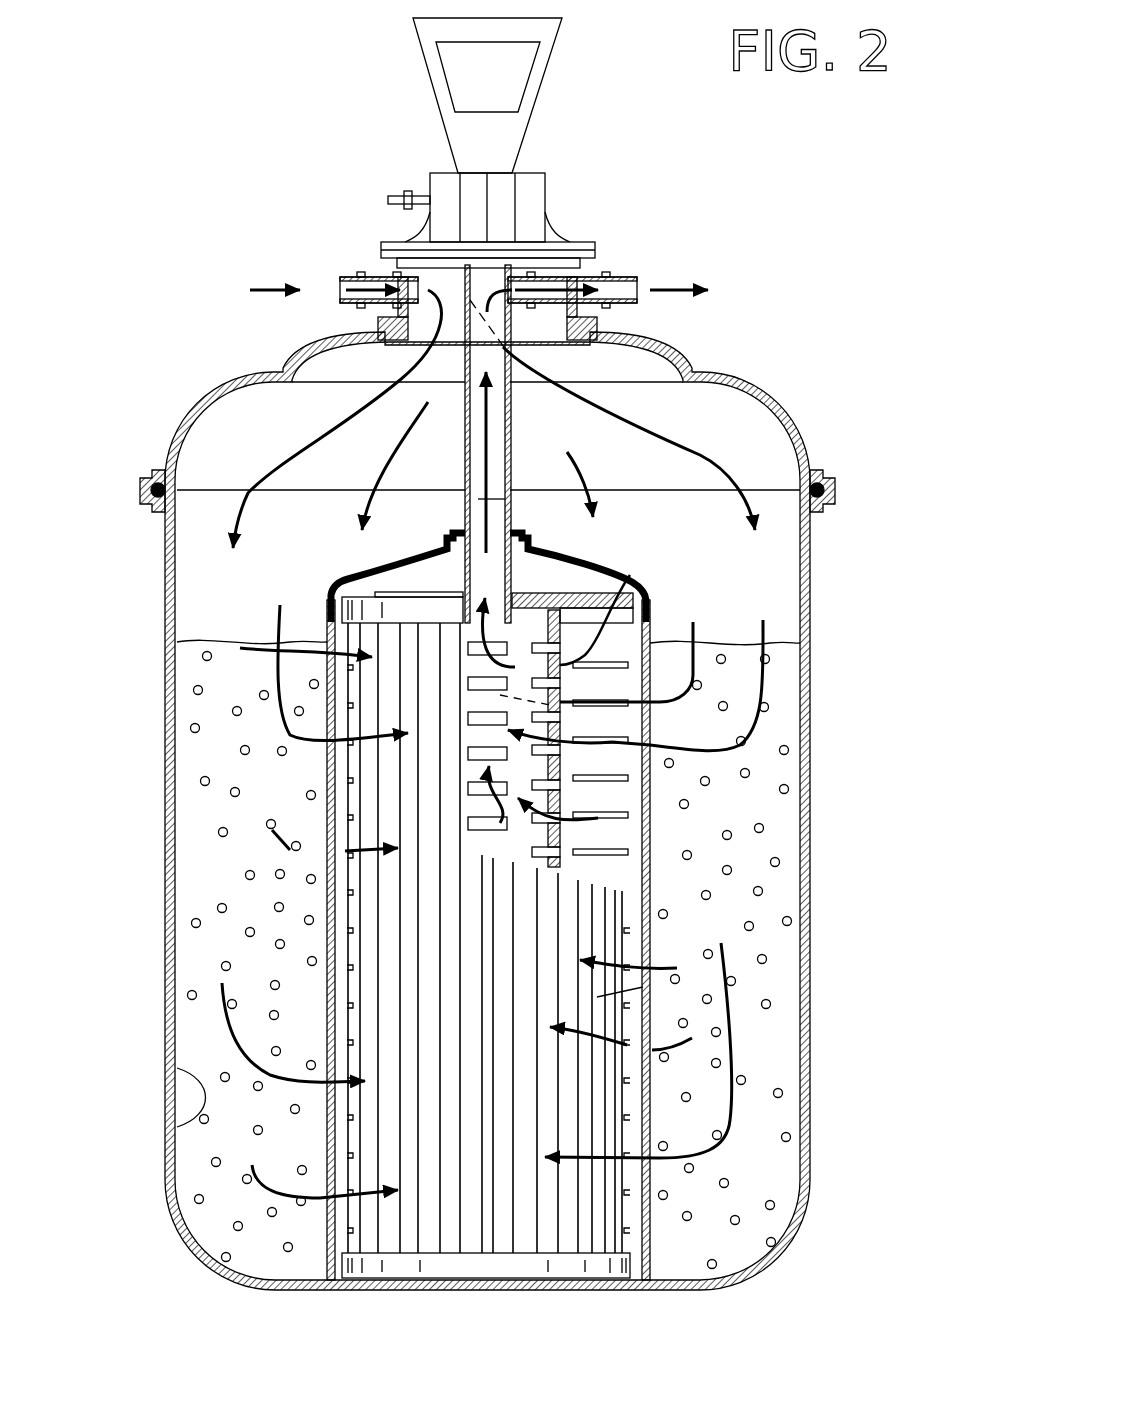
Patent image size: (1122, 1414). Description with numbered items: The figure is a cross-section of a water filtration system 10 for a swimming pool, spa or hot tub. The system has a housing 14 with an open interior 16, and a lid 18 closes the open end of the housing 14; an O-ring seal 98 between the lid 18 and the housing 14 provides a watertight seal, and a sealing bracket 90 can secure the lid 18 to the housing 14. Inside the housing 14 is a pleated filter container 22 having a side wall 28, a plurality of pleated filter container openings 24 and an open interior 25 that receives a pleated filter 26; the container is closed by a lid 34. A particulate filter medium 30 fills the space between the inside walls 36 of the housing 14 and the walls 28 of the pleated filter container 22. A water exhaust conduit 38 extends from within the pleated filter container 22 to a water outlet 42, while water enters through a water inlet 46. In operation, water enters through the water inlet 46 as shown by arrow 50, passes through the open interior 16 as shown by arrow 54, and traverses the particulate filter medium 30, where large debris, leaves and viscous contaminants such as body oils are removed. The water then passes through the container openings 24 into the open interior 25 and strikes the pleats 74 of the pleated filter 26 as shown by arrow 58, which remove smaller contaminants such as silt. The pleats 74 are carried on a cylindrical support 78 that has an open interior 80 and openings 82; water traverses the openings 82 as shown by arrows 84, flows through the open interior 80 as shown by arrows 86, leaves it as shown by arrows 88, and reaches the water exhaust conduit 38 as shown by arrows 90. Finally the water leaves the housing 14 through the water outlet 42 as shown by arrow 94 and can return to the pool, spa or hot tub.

The water filtration system 10 is at (856, 243).
The housing 14 is at (780, 866).
The open interior 16 is at (222, 580).
The lid 18 is at (758, 387).
The pleated filter container 22 is at (318, 977).
The pleated filter container openings 24 is at (652, 882).
The open interior 25 is at (655, 1212).
The pleated filter 26 is at (322, 640).
The side wall 28 is at (325, 895).
The particulate filter medium 30 is at (215, 680).
The lid 34 is at (607, 567).
The inside walls 36 is at (190, 1125).
The water exhaust conduit 38 is at (512, 427).
The water outlet 42 is at (622, 277).
The water inlet 46 is at (345, 277).
The arrow 50 is at (262, 286).
The arrow 54 is at (277, 453).
The arrow 58 is at (330, 735).
The pleats 74 is at (650, 995).
The cylindrical support 78 is at (650, 835).
The open interior 80 is at (645, 578).
The openings 82 is at (467, 753).
The arrows 84 is at (457, 623).
The arrows 86 is at (470, 800).
The arrows 88 is at (477, 663).
The arrows 90 is at (148, 478).
The arrow 94 is at (670, 290).
The O-ring seal 98 is at (140, 498).